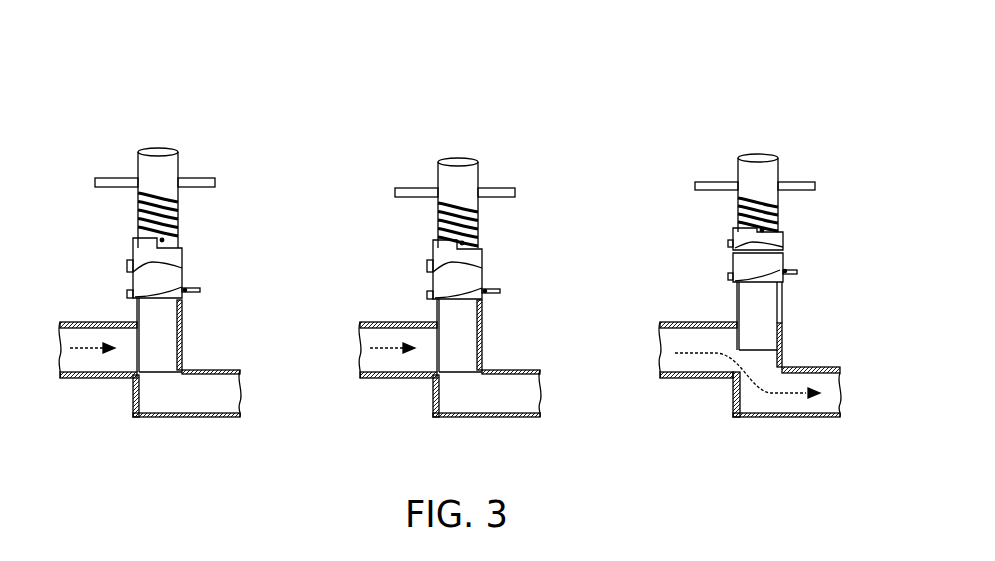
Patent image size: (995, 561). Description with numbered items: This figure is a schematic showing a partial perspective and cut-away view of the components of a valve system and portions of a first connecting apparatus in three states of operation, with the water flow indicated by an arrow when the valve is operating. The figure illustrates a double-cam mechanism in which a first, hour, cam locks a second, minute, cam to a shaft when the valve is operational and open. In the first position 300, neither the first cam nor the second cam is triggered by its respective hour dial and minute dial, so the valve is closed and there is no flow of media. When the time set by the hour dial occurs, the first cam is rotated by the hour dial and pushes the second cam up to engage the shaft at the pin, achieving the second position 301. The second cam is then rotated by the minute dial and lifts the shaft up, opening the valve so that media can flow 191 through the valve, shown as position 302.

The media flow 191 is at (747, 406).
The first position 300 is at (268, 117).
The second position 301 is at (568, 127).
The position 302 is at (868, 122).